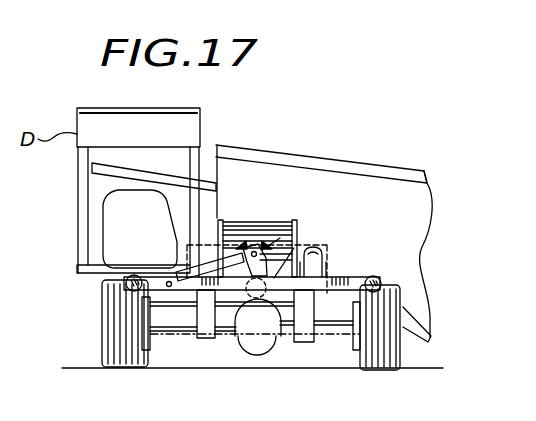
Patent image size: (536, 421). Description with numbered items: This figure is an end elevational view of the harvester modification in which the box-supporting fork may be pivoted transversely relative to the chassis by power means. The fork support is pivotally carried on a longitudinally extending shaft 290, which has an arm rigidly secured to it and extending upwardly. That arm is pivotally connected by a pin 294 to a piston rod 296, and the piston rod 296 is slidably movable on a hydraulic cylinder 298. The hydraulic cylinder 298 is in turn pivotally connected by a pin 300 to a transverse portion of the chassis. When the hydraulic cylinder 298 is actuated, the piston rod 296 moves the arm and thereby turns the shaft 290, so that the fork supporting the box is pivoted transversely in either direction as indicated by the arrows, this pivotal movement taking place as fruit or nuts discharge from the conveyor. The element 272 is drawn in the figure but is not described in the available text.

The frame structure 272 is at (300, 246).
The longitudinally extending shaft 290 is at (283, 342).
The pin 294 is at (264, 242).
The piston rod 296 is at (241, 243).
The hydraulic cylinder 298 is at (196, 278).
The pin 300 is at (170, 283).